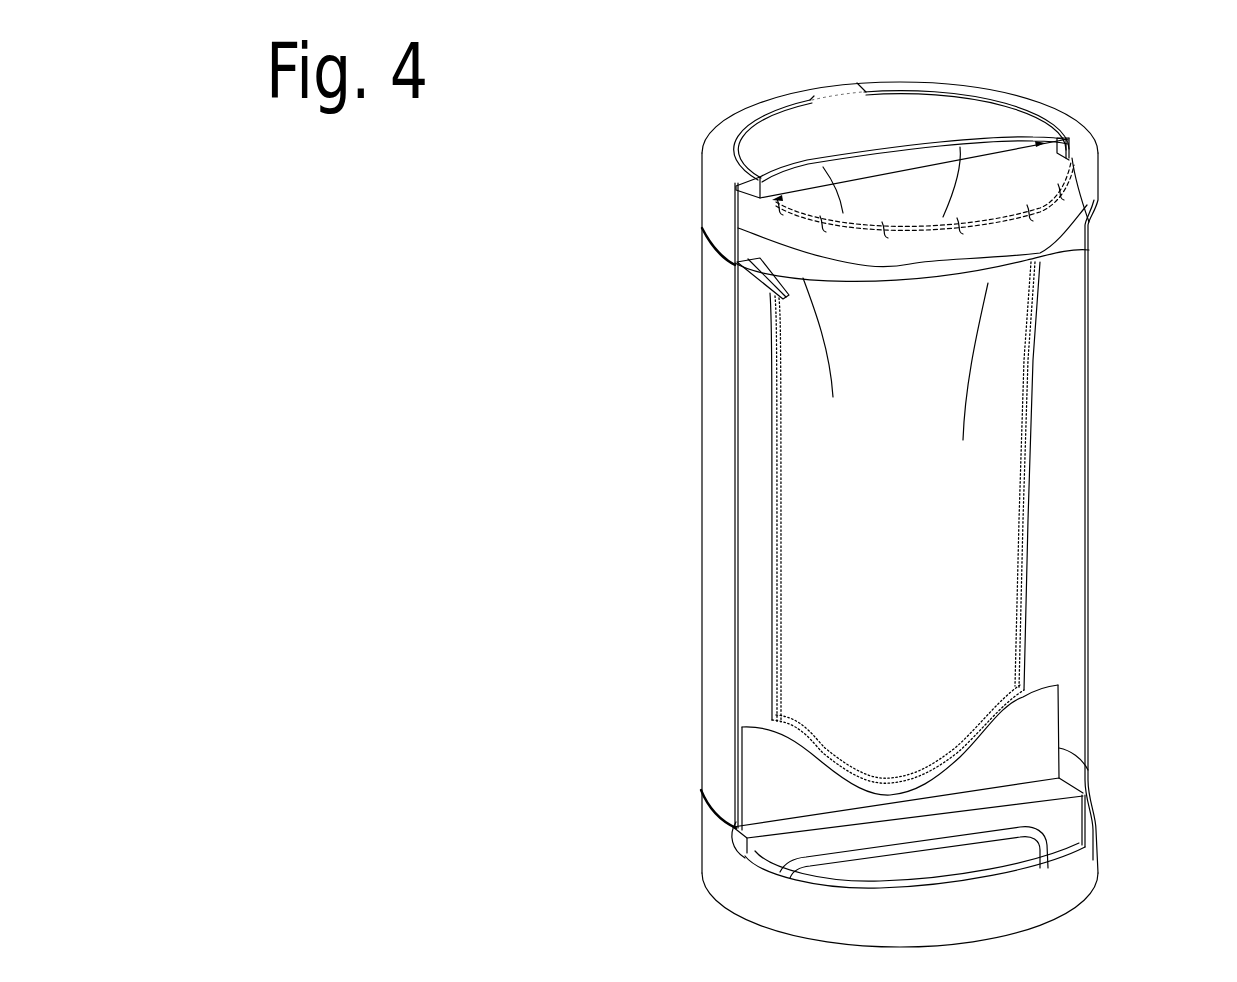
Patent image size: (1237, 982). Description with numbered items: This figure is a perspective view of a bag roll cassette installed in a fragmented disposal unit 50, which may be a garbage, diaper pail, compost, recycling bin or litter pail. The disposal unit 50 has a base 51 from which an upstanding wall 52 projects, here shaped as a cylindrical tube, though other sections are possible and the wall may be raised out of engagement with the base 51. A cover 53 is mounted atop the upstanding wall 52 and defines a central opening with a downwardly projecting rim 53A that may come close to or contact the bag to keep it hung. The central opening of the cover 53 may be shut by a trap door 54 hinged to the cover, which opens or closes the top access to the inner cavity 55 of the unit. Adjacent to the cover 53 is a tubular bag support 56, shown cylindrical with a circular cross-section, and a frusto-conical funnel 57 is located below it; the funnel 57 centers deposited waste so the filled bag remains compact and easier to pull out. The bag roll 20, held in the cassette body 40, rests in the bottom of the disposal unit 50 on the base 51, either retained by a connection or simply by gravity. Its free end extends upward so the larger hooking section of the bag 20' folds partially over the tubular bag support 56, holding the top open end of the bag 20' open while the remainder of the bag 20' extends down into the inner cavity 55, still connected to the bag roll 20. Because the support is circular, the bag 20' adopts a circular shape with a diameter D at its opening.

The bag roll 20 is at (976, 751).
The bag 20' is at (968, 465).
The cassette body 40 is at (1062, 827).
The disposal unit 50 is at (600, 652).
The base 51 is at (716, 874).
The upstanding wall 52 is at (702, 510).
The cover 53 is at (722, 163).
The downwardly projecting rim 53A is at (738, 188).
The trap door 54 is at (887, 117).
The inner cavity 55 is at (1062, 512).
The tubular bag support 56 is at (1057, 245).
The funnel 57 is at (772, 293).